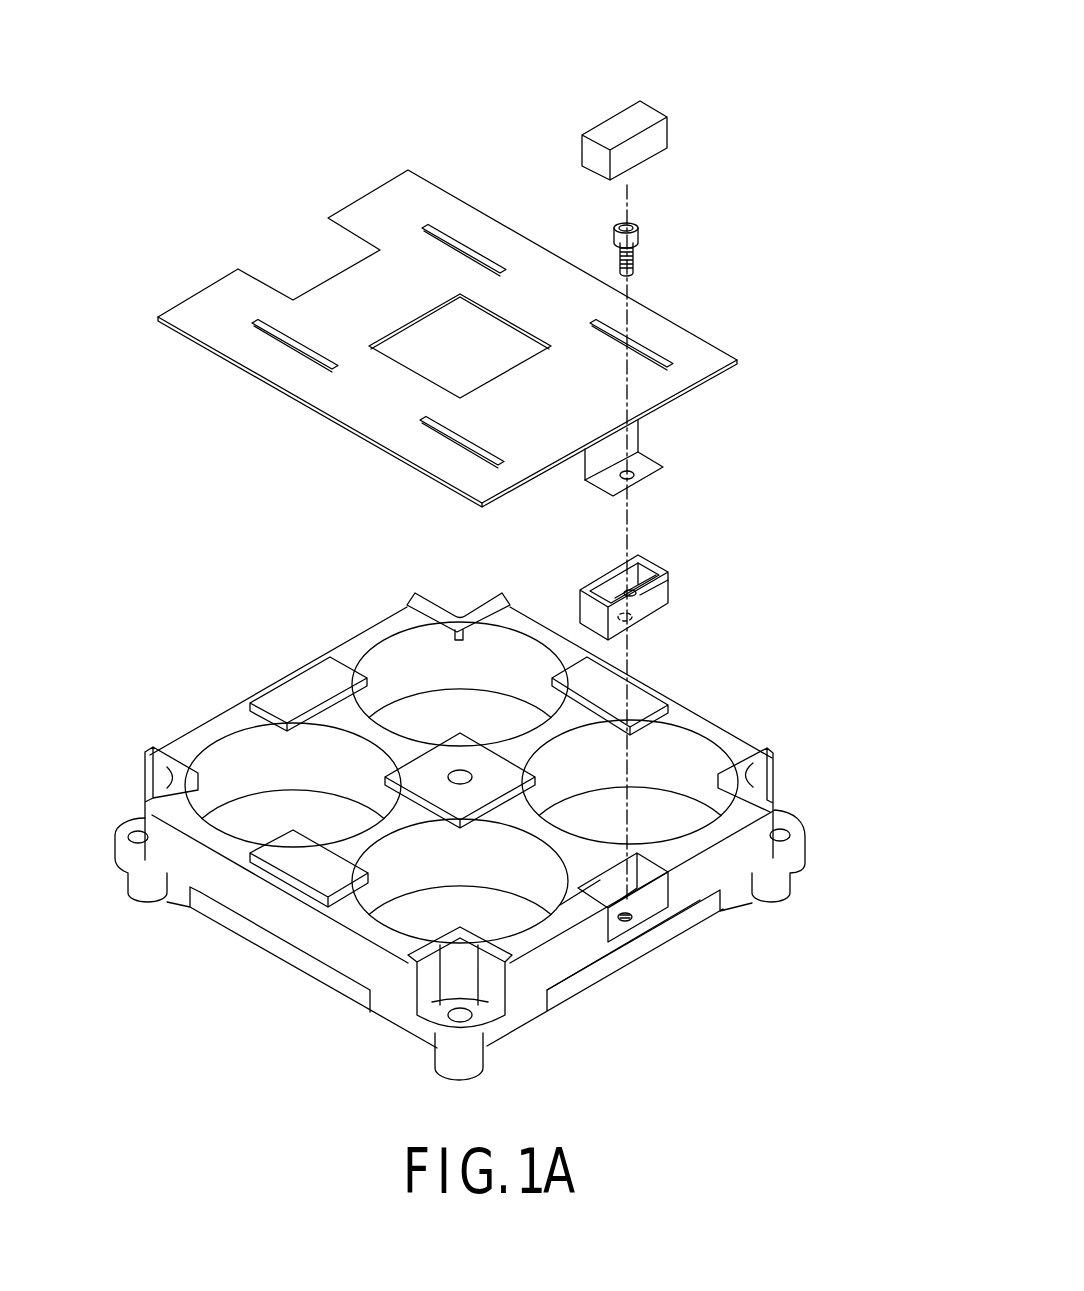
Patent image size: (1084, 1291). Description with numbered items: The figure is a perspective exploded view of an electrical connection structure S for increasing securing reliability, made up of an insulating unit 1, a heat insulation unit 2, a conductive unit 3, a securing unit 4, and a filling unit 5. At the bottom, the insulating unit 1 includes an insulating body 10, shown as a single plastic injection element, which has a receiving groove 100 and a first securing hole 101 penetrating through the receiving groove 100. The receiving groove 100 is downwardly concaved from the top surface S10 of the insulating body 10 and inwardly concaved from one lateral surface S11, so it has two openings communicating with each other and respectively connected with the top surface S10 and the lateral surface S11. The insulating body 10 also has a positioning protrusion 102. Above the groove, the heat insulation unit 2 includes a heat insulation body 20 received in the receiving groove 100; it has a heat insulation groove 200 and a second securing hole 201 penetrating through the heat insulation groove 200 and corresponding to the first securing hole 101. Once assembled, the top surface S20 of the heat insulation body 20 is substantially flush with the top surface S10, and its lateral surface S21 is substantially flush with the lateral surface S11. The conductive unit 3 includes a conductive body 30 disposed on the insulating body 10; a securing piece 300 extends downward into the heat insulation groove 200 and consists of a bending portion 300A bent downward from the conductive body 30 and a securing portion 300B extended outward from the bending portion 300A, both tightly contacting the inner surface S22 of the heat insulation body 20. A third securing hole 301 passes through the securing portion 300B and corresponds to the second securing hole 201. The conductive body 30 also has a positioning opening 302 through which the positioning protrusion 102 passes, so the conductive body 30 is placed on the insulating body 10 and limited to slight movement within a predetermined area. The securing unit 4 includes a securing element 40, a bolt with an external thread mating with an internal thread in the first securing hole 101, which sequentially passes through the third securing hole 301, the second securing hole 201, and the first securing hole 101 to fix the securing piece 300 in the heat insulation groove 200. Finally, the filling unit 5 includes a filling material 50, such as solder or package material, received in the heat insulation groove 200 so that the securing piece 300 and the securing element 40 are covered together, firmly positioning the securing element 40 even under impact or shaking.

The electrical connection structure S is at (272, 36).
The insulating unit 1 is at (505, 830).
The insulating body 10 is at (762, 833).
The receiving groove 100 is at (643, 910).
The first securing hole 101 is at (627, 923).
The positioning protrusion 102 is at (410, 773).
The top surface of the insulating body S10 is at (540, 940).
The lateral surface of the insulating body S11 is at (582, 958).
The heat insulation unit 2 is at (643, 596).
The heat insulation body 20 is at (660, 560).
The heat insulation groove 200 is at (632, 594).
The second securing hole 201 is at (632, 618).
The top surface of the heat insulation body S20 is at (612, 568).
The lateral surface of the heat insulation body S21 is at (662, 590).
The inner surface of the heat insulation body S22 is at (602, 588).
The conductive unit 3 is at (492, 357).
The conductive body 30 is at (673, 340).
The securing piece 300 is at (705, 476).
The bending portion 300A is at (633, 436).
The securing portion 300B is at (647, 462).
The third securing hole 301 is at (634, 479).
The positioning opening 302 is at (478, 347).
The securing unit 4 is at (681, 249).
The securing element 40 is at (634, 265).
The filling unit 5 is at (677, 140).
The filling material 50 is at (657, 136).